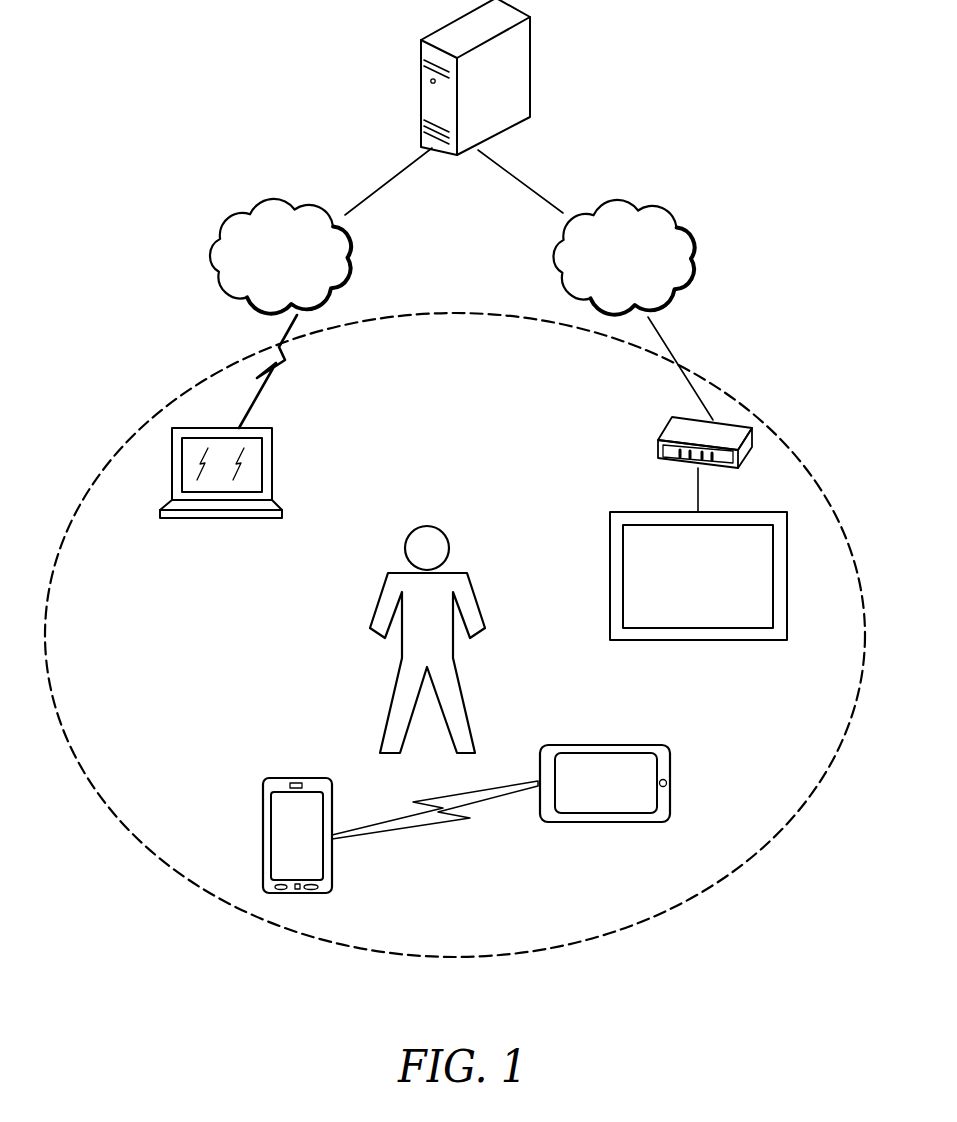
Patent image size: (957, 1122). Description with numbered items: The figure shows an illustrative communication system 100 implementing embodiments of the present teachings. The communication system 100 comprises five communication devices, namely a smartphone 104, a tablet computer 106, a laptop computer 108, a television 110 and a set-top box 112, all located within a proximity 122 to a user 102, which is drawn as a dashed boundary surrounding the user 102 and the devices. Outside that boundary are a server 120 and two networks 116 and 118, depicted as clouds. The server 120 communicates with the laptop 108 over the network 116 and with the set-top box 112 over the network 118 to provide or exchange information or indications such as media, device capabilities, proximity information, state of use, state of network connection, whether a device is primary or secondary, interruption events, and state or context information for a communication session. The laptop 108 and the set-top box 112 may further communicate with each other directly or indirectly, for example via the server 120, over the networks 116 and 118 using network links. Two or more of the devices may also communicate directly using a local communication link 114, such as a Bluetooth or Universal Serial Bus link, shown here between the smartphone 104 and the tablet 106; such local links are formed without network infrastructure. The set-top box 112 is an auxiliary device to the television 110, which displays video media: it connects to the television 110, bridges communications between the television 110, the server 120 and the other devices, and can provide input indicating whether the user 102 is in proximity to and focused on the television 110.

The communication system 100 is at (700, 100).
The user 102 is at (449, 548).
The smartphone 104 is at (281, 778).
The tablet computer 106 is at (650, 745).
The laptop computer 108 is at (273, 464).
The television 110 is at (753, 512).
The set-top box 112 is at (660, 426).
The local communication link 114 is at (410, 822).
The network 116 is at (233, 206).
The network 118 is at (673, 206).
The server 120 is at (532, 65).
The proximity 122 is at (790, 452).